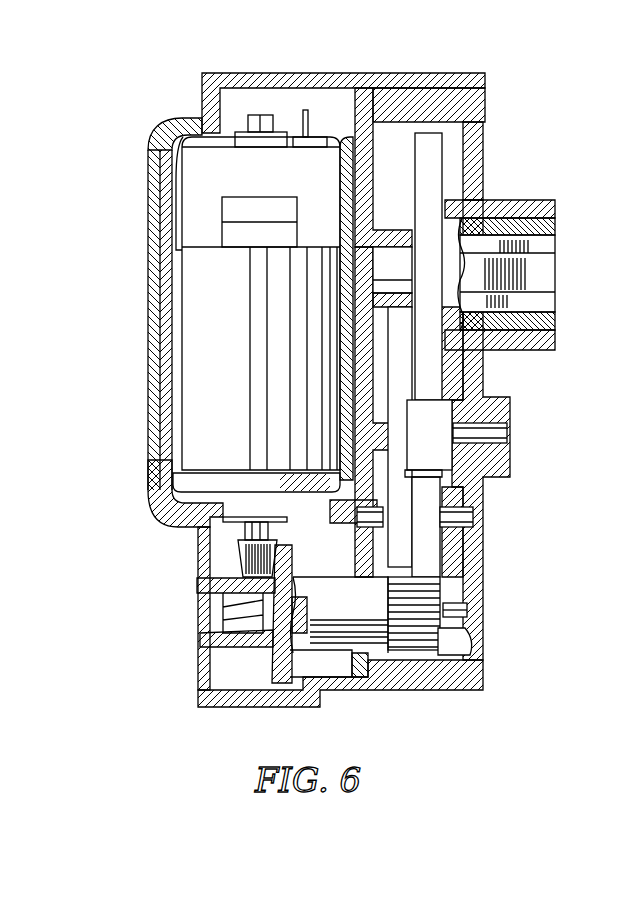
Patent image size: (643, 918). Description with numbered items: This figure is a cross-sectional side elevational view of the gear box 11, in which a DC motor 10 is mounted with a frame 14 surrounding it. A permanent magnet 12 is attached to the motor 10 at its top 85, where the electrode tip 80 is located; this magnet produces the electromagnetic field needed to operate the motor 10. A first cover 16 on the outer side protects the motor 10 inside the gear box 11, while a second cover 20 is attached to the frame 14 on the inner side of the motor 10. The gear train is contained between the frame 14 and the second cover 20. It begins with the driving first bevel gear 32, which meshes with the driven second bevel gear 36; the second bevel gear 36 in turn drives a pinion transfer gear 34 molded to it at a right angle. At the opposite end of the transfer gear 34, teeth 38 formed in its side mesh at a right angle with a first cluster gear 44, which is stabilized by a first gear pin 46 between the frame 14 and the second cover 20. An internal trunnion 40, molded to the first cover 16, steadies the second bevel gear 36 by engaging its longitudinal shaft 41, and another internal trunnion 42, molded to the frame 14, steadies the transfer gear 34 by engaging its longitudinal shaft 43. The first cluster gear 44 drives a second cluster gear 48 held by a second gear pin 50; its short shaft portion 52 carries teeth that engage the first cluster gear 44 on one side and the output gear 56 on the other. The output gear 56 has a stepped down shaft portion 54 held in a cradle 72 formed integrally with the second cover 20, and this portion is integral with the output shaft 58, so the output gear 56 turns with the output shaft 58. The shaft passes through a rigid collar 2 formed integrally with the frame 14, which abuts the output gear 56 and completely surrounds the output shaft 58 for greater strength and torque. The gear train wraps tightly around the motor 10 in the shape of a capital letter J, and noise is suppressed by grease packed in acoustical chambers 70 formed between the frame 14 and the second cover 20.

The rigid collar 2 is at (540, 198).
The DC motor 10 is at (185, 278).
The gear box 11 is at (130, 410).
The permanent magnet 12 is at (183, 192).
The frame 14 is at (477, 107).
The first cover 16 is at (150, 323).
The second cover 20 is at (365, 95).
The driving first bevel gear 32 is at (242, 560).
The pinion transfer gear 34 is at (377, 650).
The driven second bevel gear 36 is at (290, 690).
The teeth 38 is at (433, 630).
The internal trunnion 40 is at (218, 592).
The longitudinal shaft 41 is at (255, 617).
The internal trunnion 42 is at (458, 595).
The longitudinal shaft 43 is at (463, 607).
The first cluster gear 44 is at (432, 552).
The first gear pin 46 is at (477, 513).
The second cluster gear 48 is at (398, 440).
The second gear pin 50 is at (493, 433).
The short shaft portion 52 is at (437, 413).
The stepped down shaft portion 54 is at (363, 240).
The output gear 56 is at (435, 163).
The output shaft 58 is at (547, 225).
The acoustical chambers 70 is at (452, 128).
The cradle 72 is at (392, 230).
The electrode tip 80 is at (255, 115).
The top 85 is at (198, 135).